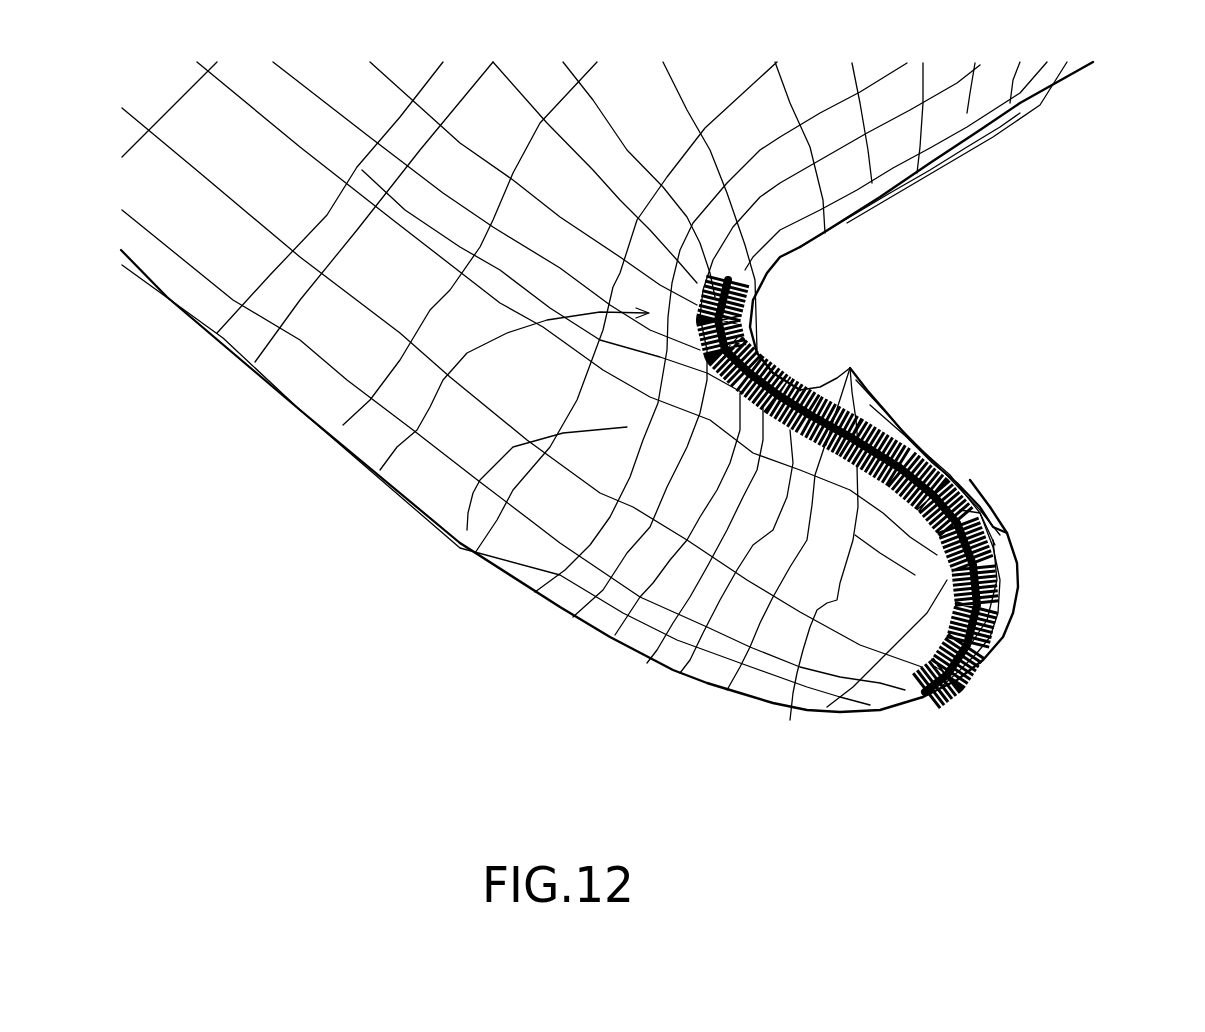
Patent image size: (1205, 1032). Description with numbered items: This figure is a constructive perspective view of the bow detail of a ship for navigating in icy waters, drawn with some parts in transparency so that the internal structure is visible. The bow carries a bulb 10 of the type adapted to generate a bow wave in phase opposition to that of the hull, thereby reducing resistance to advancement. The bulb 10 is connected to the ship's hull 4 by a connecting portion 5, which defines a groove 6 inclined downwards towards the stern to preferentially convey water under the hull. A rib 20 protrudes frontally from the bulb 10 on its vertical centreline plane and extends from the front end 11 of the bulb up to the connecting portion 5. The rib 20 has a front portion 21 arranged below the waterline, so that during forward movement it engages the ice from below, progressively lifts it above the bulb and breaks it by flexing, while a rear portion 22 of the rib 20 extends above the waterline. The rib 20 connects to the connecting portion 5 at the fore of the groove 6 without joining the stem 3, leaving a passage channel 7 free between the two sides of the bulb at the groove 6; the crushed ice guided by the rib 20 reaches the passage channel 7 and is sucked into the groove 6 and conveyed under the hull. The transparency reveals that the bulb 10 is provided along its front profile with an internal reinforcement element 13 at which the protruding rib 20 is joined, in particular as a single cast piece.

The stem 3 is at (995, 154).
The ship's hull 4 is at (269, 396).
The connecting portion 5 is at (473, 534).
The groove 6 is at (426, 429).
The passage channel 7 is at (846, 299).
The bulb 10 is at (691, 663).
The front end of the bulb 11 is at (1061, 588).
The internal reinforcement element 13 is at (812, 630).
The rib 20 is at (986, 445).
The front portion 21 is at (921, 516).
The rear portion 22 is at (909, 361).